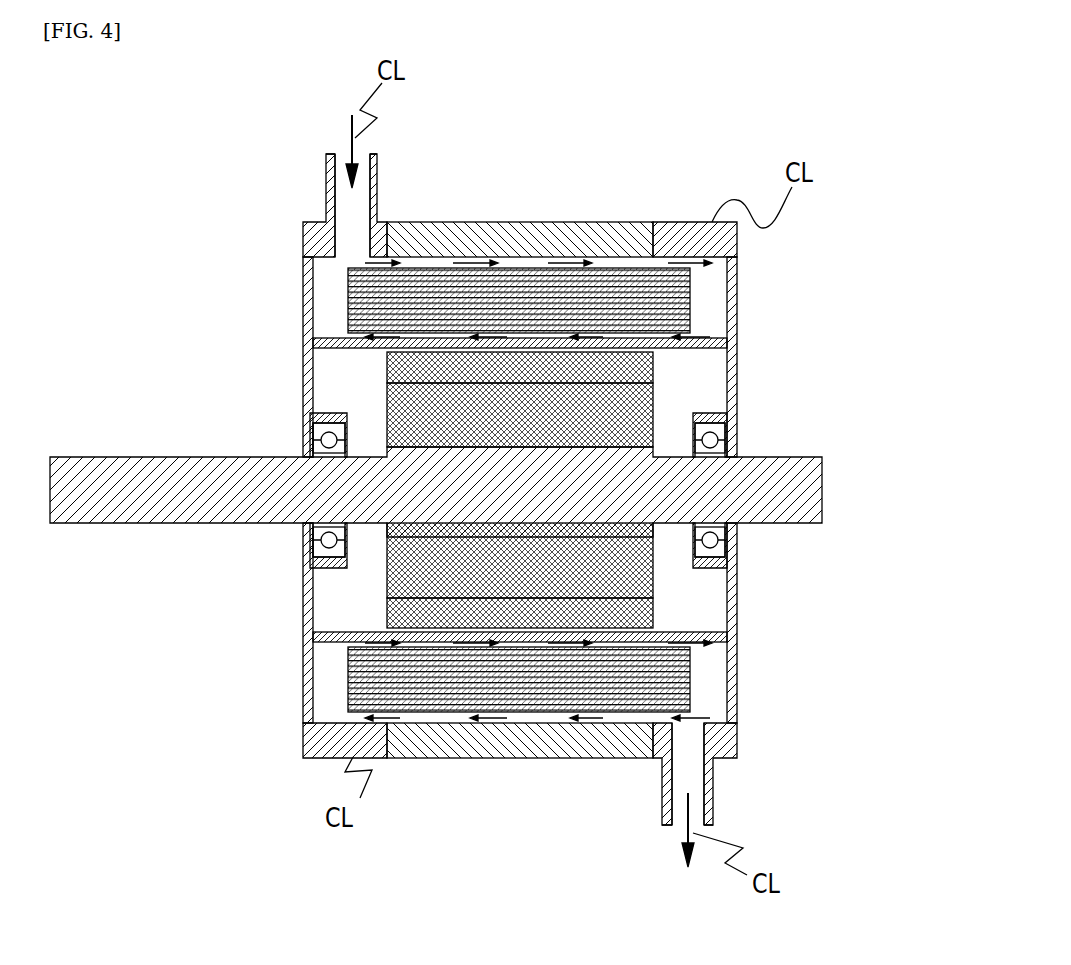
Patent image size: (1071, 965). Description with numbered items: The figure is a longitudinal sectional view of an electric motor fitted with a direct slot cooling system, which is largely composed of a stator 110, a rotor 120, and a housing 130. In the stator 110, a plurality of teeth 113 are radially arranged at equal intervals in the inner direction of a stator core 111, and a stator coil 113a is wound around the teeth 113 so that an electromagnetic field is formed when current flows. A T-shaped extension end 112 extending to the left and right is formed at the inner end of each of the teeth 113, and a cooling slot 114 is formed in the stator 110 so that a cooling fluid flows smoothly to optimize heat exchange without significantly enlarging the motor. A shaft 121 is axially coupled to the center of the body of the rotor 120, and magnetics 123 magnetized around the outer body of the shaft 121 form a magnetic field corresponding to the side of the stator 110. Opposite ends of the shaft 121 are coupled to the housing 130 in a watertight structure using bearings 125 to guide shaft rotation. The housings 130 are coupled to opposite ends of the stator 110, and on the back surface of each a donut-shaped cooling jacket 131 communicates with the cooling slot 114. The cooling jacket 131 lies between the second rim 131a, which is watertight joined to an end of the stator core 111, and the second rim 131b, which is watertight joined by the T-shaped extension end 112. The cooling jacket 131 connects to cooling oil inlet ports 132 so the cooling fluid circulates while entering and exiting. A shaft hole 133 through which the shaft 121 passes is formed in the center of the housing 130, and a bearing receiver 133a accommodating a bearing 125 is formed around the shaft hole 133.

The stator 110 is at (713, 150).
The stator core 111 is at (418, 224).
The T-shaped extension end 112 is at (473, 340).
The teeth 113 is at (545, 263).
The stator coil 113a is at (665, 293).
The cooling slot 114 is at (616, 263).
The rotor 120 is at (892, 280).
The shaft 121 is at (800, 477).
The magnetics 123 is at (647, 358).
The bearing 125 is at (725, 437).
The housing 130 is at (205, 143).
The cooling jacket 131 is at (327, 285).
The second rim 131a is at (317, 243).
The second rim 131b is at (337, 340).
The cooling oil inlet port 132 is at (333, 178).
The shaft hole 133 is at (310, 440).
The bearing receiver 133a is at (322, 417).